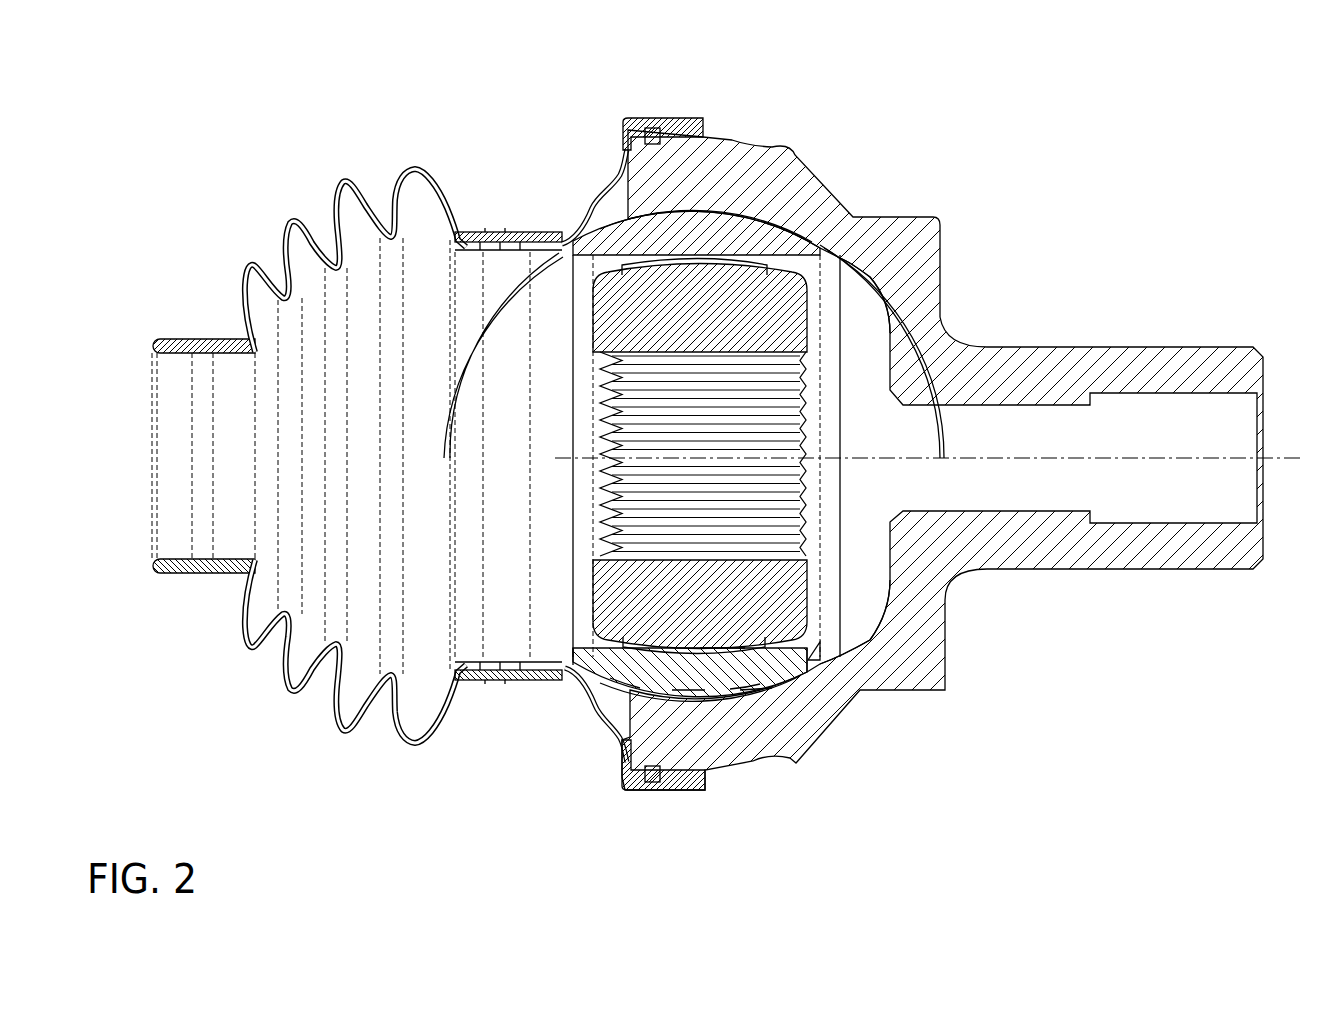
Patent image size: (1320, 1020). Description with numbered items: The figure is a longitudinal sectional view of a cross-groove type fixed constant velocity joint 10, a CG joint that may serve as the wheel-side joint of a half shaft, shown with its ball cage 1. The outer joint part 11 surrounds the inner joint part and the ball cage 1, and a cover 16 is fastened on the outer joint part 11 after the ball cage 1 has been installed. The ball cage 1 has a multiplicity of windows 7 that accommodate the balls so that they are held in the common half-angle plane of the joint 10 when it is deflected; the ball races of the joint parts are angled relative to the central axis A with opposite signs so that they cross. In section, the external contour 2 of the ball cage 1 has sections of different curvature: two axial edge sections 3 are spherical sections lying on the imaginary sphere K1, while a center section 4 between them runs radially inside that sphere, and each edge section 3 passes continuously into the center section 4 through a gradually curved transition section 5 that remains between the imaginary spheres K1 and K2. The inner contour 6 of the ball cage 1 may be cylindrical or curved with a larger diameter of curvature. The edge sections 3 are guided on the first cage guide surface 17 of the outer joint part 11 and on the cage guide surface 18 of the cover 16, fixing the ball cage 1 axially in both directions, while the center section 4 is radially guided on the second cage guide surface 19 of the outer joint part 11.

The fixed constant velocity joint 10 is at (425, 130).
The ball cage 1 is at (718, 464).
The external contour 2 is at (755, 690).
The axial edge sections 3 is at (573, 665).
The center section 4 is at (688, 690).
The transition section 5 is at (623, 683).
The inner contour 6 is at (720, 653).
The windows 7 is at (757, 641).
The outer joint part 11 is at (942, 441).
The cover 16 is at (595, 205).
The first cage guide surface 17 is at (808, 235).
The first cage guide surface 18 is at (570, 242).
The second cage guide surface 19 is at (730, 218).
The imaginary sphere K1 is at (920, 353).
The imaginary sphere K2 is at (926, 390).
The central axis A is at (1227, 458).